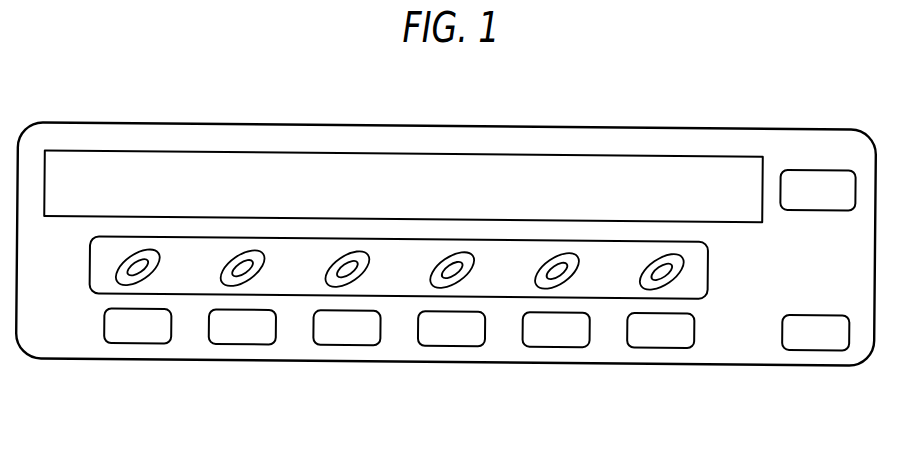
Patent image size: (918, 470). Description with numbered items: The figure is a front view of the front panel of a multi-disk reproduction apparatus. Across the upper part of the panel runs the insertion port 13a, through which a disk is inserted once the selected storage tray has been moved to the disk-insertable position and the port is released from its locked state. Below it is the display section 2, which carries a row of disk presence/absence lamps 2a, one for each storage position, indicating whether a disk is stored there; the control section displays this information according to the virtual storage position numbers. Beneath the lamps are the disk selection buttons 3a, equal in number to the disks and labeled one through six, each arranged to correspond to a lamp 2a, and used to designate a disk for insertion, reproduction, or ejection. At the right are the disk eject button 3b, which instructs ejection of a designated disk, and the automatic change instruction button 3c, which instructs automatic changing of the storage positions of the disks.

The display section 2 is at (117, 238).
The disk presence/absence lamp 2a is at (444, 250).
The insertion port 13a is at (518, 155).
The disk selection buttons 3a is at (662, 356).
The disk eject button 3b is at (827, 170).
The automatic change instruction button 3c is at (830, 350).